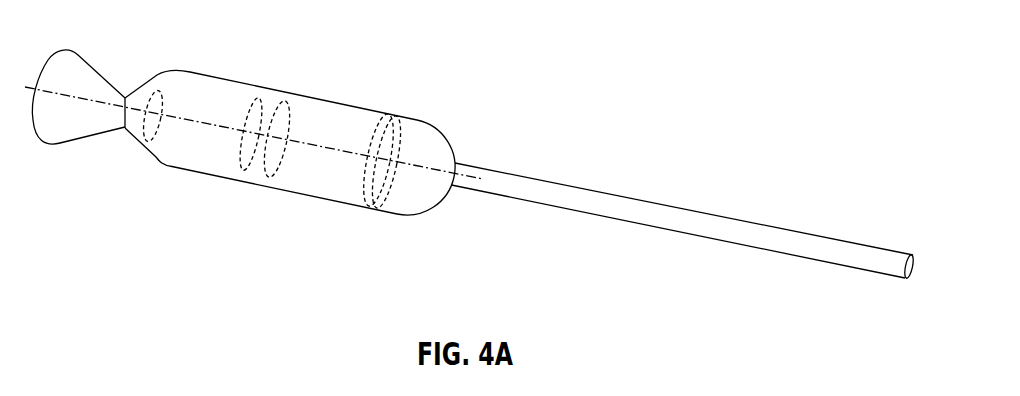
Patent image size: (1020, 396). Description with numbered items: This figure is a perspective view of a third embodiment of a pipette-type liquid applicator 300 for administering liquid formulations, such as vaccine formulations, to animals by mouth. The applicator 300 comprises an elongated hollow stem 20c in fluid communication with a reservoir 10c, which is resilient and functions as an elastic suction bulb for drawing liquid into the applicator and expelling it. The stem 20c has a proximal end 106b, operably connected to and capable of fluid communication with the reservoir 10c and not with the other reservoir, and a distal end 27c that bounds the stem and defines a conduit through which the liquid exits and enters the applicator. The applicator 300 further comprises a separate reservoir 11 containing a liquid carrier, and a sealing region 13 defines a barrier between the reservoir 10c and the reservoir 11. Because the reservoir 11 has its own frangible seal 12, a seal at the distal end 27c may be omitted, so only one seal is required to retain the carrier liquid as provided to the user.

The applicator 300 is at (326, 168).
The reservoir 11 is at (199, 114).
The frangible seal 12 is at (110, 112).
The sealing region 13 is at (268, 183).
The reservoir 10c is at (381, 144).
The proximal end 106b is at (450, 198).
The hollow stem 20c is at (690, 237).
The distal end 27c is at (913, 269).